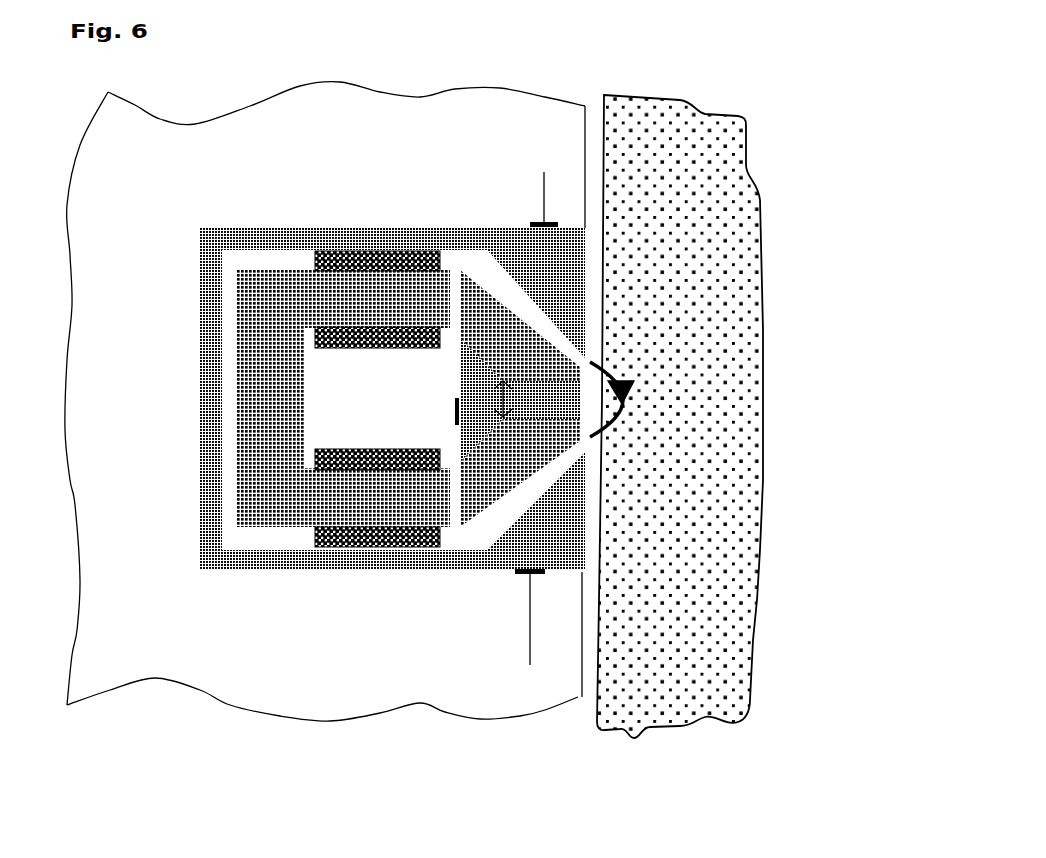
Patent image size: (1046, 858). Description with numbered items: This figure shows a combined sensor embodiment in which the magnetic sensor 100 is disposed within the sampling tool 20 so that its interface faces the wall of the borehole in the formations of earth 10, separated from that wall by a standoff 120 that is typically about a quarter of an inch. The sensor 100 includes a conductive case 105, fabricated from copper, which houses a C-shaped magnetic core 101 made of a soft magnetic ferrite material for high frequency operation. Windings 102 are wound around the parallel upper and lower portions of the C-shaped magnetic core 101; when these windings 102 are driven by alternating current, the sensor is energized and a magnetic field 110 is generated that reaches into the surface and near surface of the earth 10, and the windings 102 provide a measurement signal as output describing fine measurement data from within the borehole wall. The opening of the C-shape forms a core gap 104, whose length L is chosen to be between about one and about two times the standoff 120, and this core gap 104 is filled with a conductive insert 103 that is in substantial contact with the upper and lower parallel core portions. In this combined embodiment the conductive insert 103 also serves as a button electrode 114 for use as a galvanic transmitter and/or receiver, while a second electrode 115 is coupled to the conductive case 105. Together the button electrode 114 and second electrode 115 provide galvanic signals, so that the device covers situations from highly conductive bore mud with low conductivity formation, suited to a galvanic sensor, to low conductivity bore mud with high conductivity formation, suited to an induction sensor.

The earth 10 is at (705, 478).
The sampling tool 20 is at (258, 684).
The magnetic sensor 100 is at (208, 514).
The magnetic core 101 is at (282, 342).
The windings 102 is at (352, 337).
The conductive insert 103 is at (477, 368).
The core gap 104 is at (500, 405).
The conductive case 105 is at (215, 237).
The magnetic field 110 is at (628, 392).
The button electrode 114 is at (456, 411).
The second electrode 115 is at (544, 172).
The standoff 120 is at (597, 540).